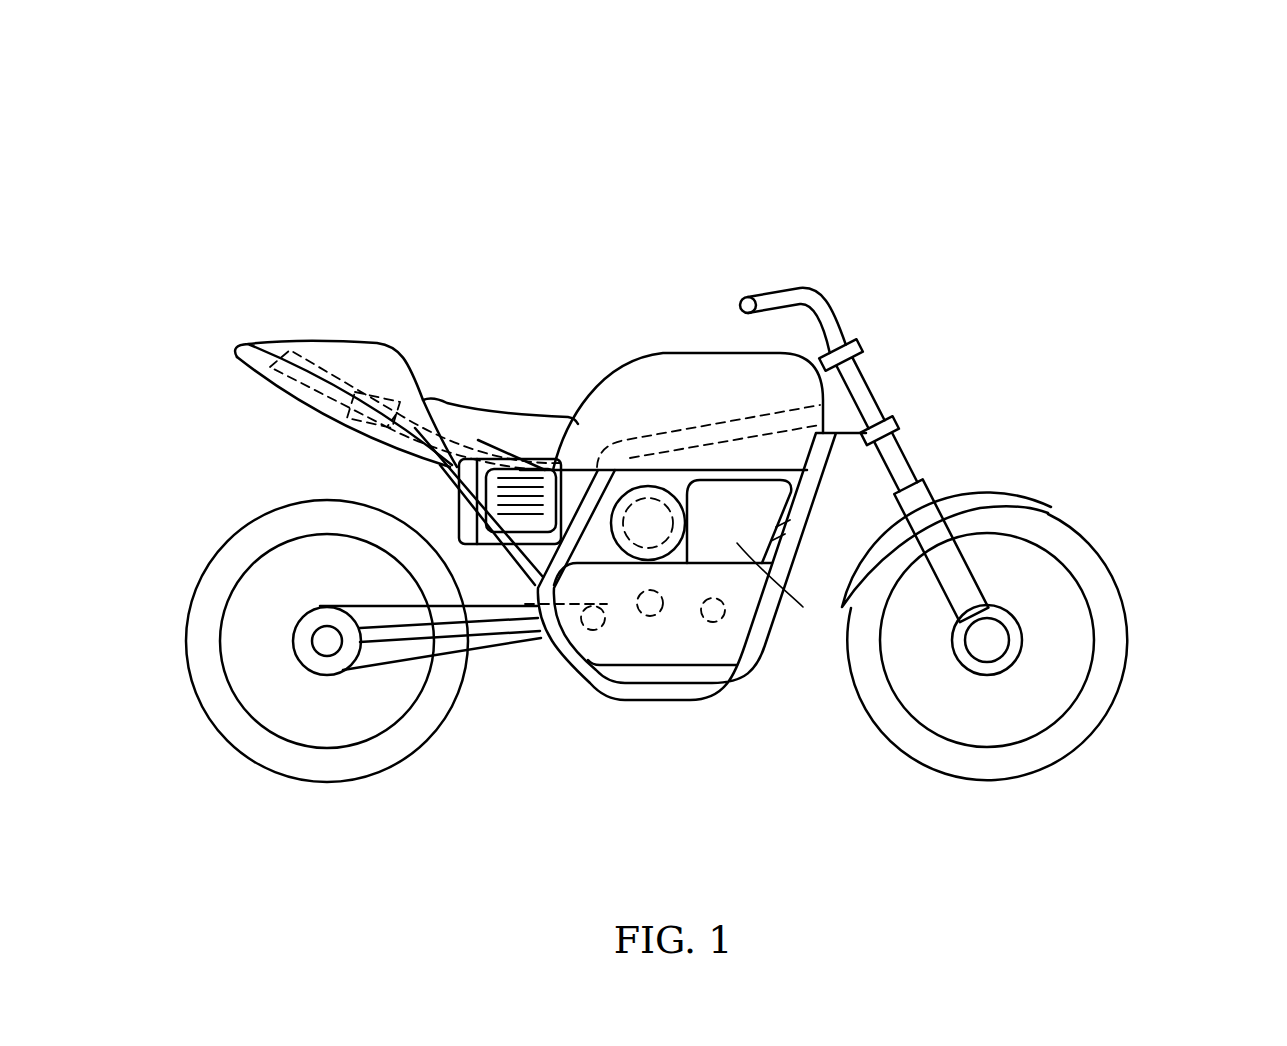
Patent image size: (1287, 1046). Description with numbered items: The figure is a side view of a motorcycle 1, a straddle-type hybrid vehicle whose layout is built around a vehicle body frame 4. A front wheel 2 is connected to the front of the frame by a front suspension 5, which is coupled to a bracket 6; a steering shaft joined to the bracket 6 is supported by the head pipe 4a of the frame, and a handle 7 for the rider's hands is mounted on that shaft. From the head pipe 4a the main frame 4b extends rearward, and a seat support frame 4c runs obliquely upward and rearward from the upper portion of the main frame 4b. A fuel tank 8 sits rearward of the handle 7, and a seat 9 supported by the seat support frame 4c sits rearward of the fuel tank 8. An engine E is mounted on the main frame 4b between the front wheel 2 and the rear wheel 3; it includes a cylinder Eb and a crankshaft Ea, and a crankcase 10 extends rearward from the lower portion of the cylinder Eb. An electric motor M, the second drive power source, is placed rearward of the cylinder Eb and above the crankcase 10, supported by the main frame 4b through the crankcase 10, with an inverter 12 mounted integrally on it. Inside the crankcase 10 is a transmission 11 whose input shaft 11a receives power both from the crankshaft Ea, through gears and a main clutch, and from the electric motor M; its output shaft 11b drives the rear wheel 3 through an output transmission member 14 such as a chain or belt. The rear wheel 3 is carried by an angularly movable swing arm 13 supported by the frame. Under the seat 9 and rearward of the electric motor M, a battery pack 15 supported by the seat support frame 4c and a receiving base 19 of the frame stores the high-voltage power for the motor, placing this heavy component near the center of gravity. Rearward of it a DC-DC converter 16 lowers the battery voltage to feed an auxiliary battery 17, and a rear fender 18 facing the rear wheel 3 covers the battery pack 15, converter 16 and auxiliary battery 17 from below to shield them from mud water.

The motorcycle 1 is at (965, 228).
The front wheel 2 is at (1124, 602).
The rear wheel 3 is at (186, 636).
The vehicle body frame 4 is at (818, 490).
The head pipe 4a is at (855, 370).
The main frame 4b is at (668, 445).
The seat support frame 4c is at (477, 413).
The front suspension 5 is at (947, 584).
The bracket 6 is at (898, 427).
The handle 7 is at (750, 294).
The fuel tank 8 is at (707, 353).
The seat 9 is at (513, 415).
The crankcase 10 is at (717, 645).
The transmission 11 is at (630, 637).
The input shaft 11a is at (650, 617).
The output shaft 11b is at (593, 632).
The inverter 12 is at (655, 470).
The swing arm 13 is at (487, 625).
The output transmission member 14 is at (446, 660).
The battery pack 15 is at (483, 530).
The DC-DC converter 16 is at (390, 410).
The auxiliary battery 17 is at (320, 350).
The rear fender 18 is at (410, 474).
The receiving base 19 is at (445, 498).
The engine E is at (790, 541).
The crankshaft Ea is at (723, 621).
The cylinder Eb is at (770, 510).
The electric motor M is at (648, 512).